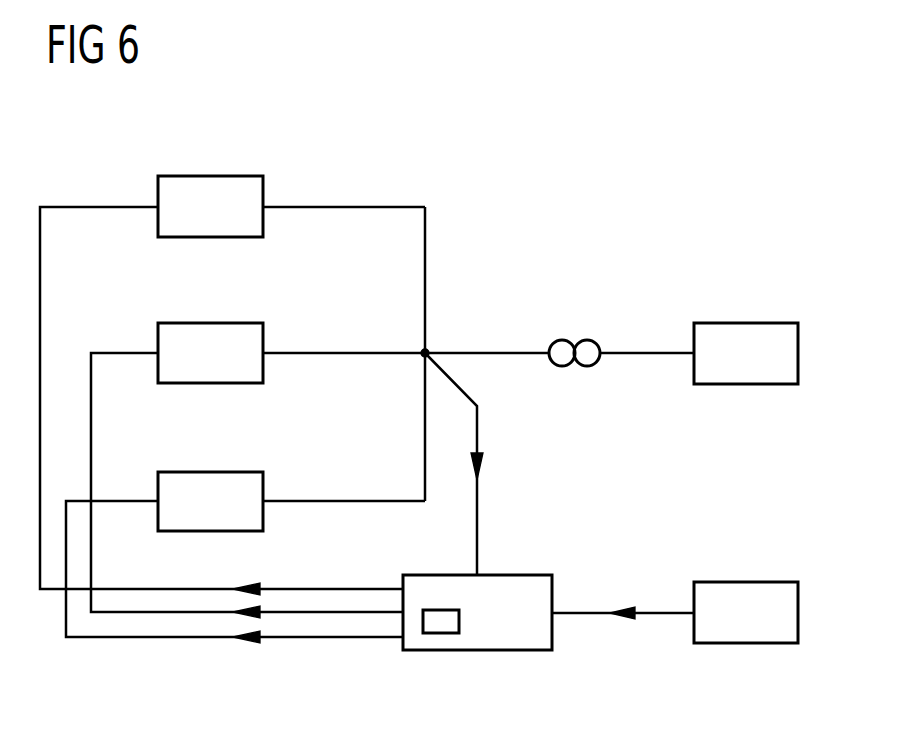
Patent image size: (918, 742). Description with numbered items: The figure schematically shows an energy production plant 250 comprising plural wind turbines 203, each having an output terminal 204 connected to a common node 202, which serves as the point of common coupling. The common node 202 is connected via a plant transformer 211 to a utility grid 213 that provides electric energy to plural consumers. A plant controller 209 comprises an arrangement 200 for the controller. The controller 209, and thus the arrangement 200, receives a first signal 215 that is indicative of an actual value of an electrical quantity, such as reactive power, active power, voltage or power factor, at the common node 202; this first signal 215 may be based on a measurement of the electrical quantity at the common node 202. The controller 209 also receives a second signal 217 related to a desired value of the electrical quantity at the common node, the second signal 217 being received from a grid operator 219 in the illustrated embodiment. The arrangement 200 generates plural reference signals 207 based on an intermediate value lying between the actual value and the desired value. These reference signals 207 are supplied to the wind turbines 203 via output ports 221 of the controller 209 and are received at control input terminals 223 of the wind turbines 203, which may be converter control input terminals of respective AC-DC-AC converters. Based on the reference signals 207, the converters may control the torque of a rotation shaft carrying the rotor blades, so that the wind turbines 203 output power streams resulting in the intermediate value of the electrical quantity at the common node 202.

The energy production plant 250 is at (704, 157).
The wind turbine 203 is at (215, 176).
The output terminal 204 is at (263, 207).
The control input terminal 223 is at (158, 207).
The common node 202 is at (428, 352).
The plant transformer 211 is at (587, 340).
The utility grid 213 is at (745, 323).
The first signal 215 is at (479, 480).
The plant controller 209 is at (510, 575).
The arrangement 200 is at (438, 634).
The output port 221 is at (403, 636).
The reference signal 207 is at (234, 592).
The second signal 217 is at (610, 610).
The grid operator 219 is at (745, 582).